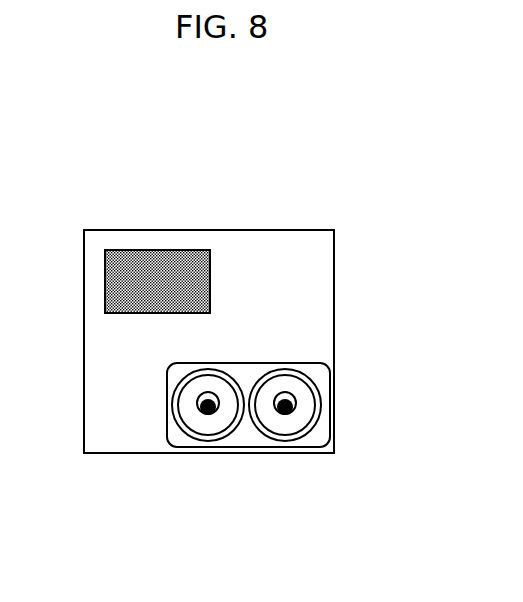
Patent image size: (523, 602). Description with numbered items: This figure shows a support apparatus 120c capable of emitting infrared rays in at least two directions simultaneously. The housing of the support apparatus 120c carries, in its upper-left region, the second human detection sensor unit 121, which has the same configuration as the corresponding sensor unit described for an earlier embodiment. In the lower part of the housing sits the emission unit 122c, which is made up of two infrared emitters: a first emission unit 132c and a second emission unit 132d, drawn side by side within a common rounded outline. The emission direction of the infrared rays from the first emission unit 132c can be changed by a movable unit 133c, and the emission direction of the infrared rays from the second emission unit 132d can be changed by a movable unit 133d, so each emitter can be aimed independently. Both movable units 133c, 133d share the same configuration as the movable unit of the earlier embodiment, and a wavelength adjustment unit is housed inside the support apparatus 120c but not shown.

The support apparatus 120c is at (338, 172).
The second human detection sensor unit 121 is at (128, 262).
The emission unit 122c is at (313, 505).
The second emission unit 132d is at (200, 423).
The first emission unit 132c is at (282, 423).
The movable unit 133d is at (220, 392).
The movable unit 133c is at (303, 395).